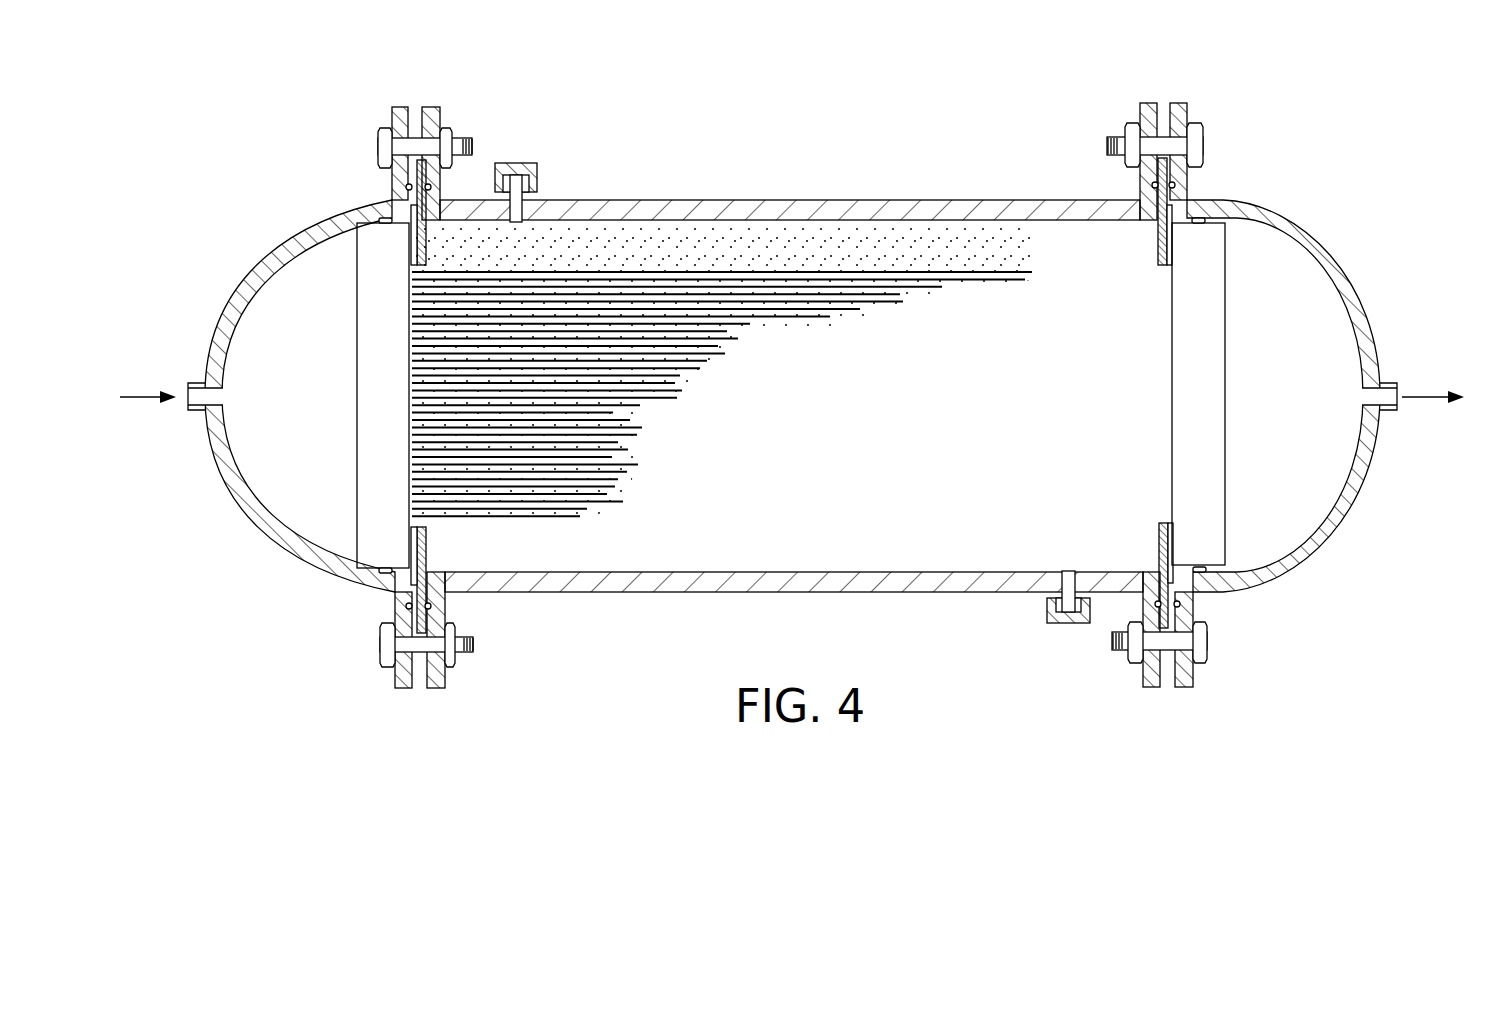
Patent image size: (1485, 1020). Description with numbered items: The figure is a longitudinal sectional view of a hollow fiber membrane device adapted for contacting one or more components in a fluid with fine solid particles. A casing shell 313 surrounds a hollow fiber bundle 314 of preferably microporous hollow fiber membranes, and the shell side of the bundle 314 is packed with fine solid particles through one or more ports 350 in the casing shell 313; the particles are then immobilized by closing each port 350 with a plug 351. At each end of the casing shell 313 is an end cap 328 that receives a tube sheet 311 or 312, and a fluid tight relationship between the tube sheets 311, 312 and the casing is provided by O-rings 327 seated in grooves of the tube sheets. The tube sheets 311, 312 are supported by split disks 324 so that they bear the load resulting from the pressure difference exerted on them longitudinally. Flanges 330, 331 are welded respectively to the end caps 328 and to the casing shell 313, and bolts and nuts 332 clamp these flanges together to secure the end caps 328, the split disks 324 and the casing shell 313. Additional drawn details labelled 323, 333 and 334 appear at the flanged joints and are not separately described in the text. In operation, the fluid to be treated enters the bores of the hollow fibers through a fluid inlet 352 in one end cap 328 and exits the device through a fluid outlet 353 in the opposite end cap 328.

The tube sheet 311 is at (1215, 380).
The tube sheet 312 is at (370, 380).
The casing shell 313 is at (705, 200).
The hollow fiber bundle 314 is at (868, 300).
The gasket strip 323 is at (414, 550).
The split disk 324 is at (425, 562).
The O-ring 327 is at (385, 216).
The end cap 328 is at (232, 290).
The flange 330 is at (400, 110).
The flange 331 is at (428, 110).
The bolts and nuts 332 is at (382, 652).
The O-ring 333 is at (408, 607).
The O-ring 334 is at (430, 607).
The port 350 is at (536, 190).
The plug 351 is at (530, 168).
The fluid inlet 352 is at (188, 383).
The fluid outlet 353 is at (1415, 409).